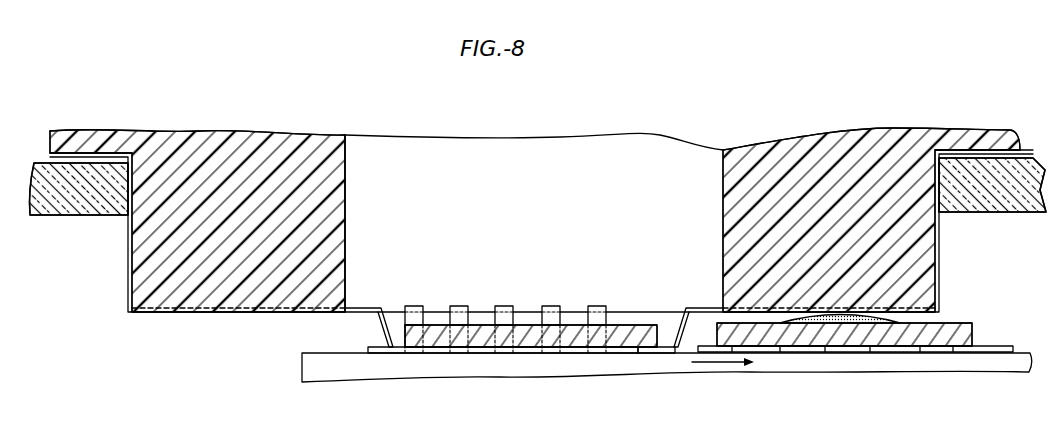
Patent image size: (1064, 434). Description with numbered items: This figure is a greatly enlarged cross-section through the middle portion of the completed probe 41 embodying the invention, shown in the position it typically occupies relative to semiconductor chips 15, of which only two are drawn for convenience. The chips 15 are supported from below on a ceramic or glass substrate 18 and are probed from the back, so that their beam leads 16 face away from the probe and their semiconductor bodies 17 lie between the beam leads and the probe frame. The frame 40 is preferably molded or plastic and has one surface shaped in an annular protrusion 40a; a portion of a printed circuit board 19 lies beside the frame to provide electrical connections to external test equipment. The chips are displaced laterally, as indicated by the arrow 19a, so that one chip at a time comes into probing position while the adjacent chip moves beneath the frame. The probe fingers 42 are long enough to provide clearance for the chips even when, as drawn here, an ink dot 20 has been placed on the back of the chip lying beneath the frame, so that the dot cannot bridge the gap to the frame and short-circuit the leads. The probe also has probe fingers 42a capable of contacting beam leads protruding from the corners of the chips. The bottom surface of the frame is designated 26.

The semiconductor chips 15 is at (582, 340).
The beam leads 16 is at (675, 350).
The semiconductor bodies 17 is at (487, 348).
The substrate 18 is at (353, 376).
The printed circuit board 19 is at (88, 216).
The arrow 19a is at (720, 366).
The ink dot 20 is at (897, 322).
The bottom surface of body 26 is at (207, 313).
The frame 40 is at (125, 130).
The annular protrusion 40a is at (235, 217).
The probe 41 is at (214, 124).
The probe fingers 42 is at (385, 342).
The probe fingers 42a is at (405, 318).